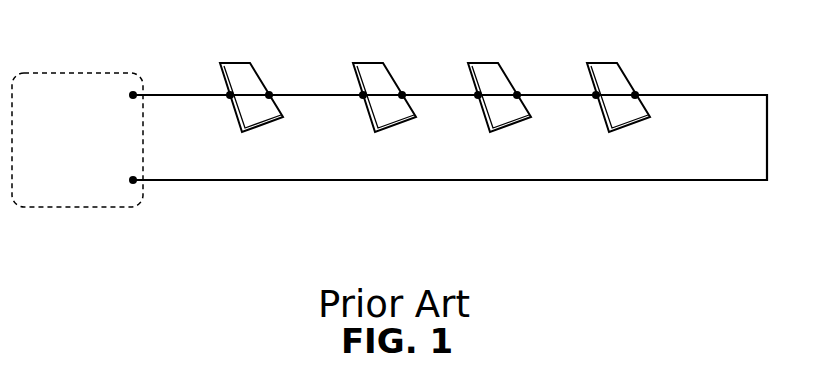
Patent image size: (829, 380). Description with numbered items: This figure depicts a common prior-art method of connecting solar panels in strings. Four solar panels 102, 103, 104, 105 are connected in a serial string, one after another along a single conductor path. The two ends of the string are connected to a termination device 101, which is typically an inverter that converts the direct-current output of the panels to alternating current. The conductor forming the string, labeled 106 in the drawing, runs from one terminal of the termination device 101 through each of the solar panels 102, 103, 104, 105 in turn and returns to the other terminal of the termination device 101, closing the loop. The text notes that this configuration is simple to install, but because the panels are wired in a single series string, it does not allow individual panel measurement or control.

The termination device 101 is at (63, 73).
The solar panel 102 is at (222, 75).
The solar panel 103 is at (355, 75).
The solar panel 104 is at (468, 73).
The solar panel 105 is at (588, 70).
The single insulated wire 106 is at (720, 95).